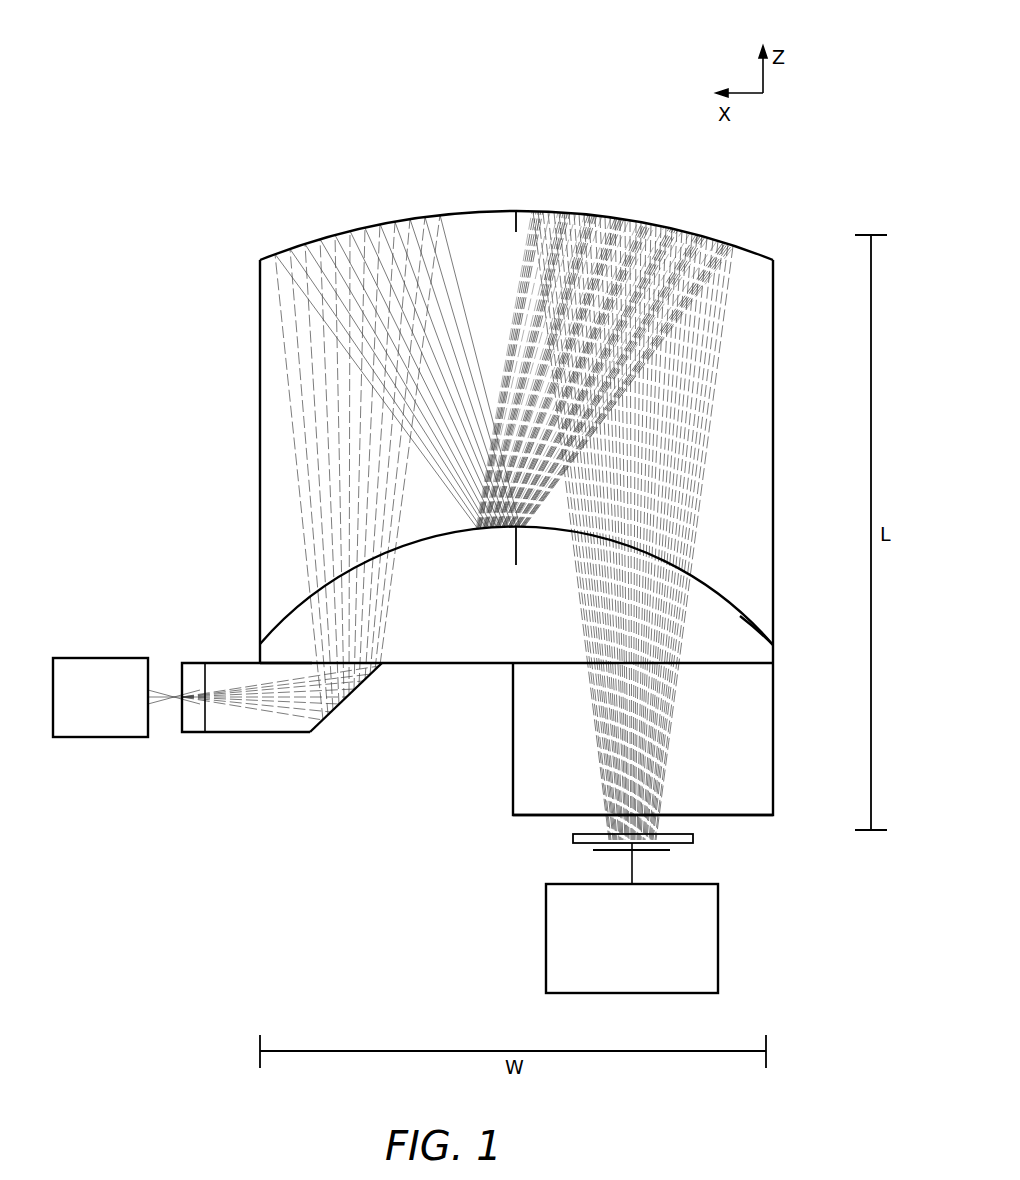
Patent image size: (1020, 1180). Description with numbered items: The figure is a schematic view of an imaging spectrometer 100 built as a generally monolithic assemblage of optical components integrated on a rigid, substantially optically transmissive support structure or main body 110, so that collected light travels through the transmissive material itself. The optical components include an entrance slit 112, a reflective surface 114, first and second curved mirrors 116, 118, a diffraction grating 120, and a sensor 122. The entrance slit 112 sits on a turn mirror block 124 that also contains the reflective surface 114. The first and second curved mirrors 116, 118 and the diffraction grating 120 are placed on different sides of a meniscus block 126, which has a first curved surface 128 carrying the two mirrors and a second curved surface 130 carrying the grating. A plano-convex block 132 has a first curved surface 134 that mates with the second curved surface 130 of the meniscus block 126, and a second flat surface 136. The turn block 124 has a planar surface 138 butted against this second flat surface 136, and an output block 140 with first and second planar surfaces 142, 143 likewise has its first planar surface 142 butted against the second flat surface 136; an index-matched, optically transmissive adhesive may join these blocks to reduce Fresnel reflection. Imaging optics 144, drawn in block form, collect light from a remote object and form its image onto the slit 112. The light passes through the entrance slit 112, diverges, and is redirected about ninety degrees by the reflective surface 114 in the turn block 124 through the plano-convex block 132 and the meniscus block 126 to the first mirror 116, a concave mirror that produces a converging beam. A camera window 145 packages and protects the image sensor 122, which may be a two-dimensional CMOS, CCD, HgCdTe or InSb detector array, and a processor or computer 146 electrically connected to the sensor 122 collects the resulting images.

The imaging spectrometer 100 is at (212, 78).
The main body 110 is at (232, 516).
The entrance slit 112 is at (182, 700).
The reflective surface 114 is at (338, 712).
The first curved mirror 116 is at (332, 237).
The second curved mirror 118 is at (645, 226).
The diffraction grating 120 is at (500, 542).
The sensor 122 is at (655, 857).
The turn mirror block 124 is at (272, 745).
The meniscus block 126 is at (268, 422).
The first curved surface 128 is at (488, 210).
The second curved surface 130 is at (730, 612).
The plano-convex block 132 is at (482, 652).
The first curved surface 134 is at (750, 630).
The second flat surface 136 is at (405, 665).
The planar surface 138 is at (277, 663).
The output block 140 is at (790, 742).
The first planar surface 142 is at (733, 665).
The second planar surface 143 is at (540, 818).
The imaging optics 144 is at (112, 658).
The camera window 145 is at (695, 838).
The processor or computer 146 is at (546, 955).